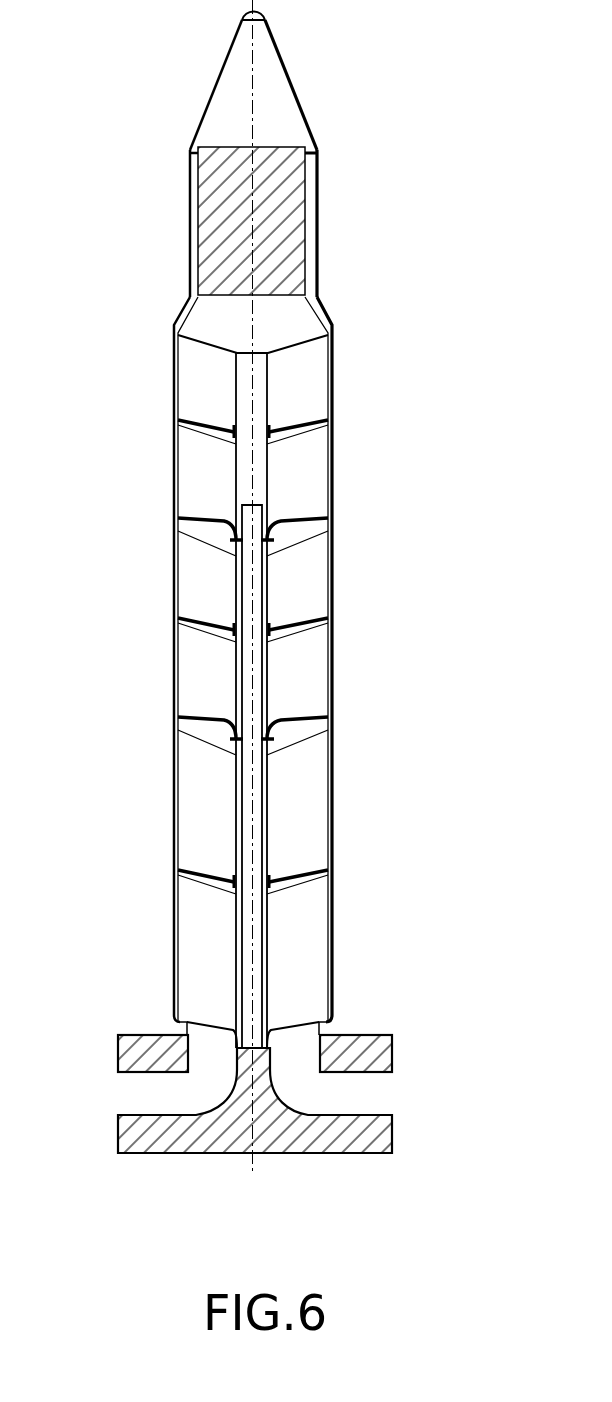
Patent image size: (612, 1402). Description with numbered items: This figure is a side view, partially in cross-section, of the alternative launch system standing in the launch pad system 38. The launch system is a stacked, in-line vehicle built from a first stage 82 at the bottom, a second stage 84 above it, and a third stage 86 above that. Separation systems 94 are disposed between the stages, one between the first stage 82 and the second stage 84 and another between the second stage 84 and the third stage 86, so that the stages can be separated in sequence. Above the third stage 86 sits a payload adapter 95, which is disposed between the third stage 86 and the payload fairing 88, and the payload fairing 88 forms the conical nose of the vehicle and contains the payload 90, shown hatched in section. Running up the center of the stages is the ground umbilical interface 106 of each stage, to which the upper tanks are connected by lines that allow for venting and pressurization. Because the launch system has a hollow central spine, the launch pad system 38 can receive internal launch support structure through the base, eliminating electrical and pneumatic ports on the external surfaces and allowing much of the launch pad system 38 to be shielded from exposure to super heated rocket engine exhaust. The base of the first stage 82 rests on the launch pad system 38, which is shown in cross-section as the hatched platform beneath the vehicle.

The launch pad system 38 is at (405, 1015).
The payload fairing 88 is at (208, 103).
The payload 90 is at (220, 215).
The payload adapter 95 is at (178, 320).
The third stage 86 is at (170, 340).
The second stage 84 is at (170, 540).
The first stage 82 is at (170, 735).
The separation systems 94 is at (178, 527).
The ground umbilical interface 106 is at (268, 518).